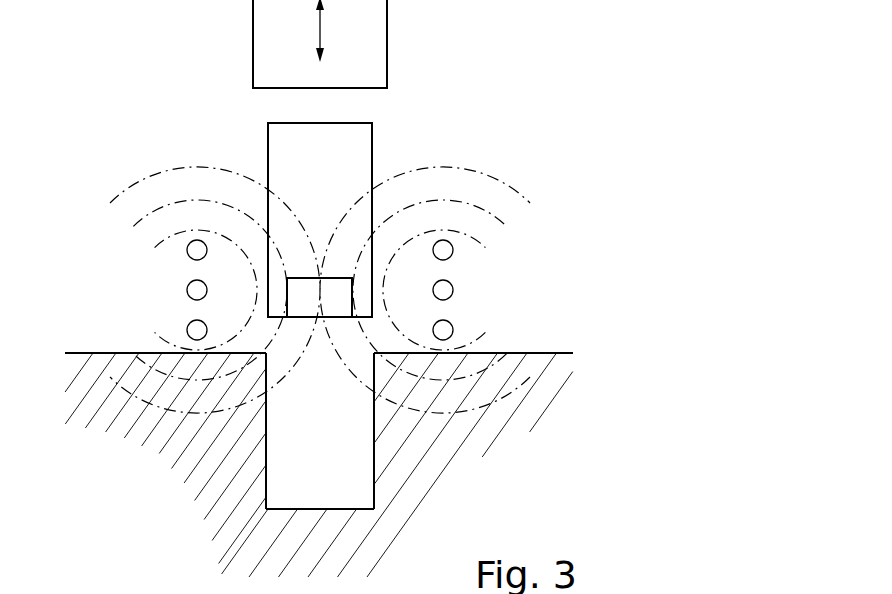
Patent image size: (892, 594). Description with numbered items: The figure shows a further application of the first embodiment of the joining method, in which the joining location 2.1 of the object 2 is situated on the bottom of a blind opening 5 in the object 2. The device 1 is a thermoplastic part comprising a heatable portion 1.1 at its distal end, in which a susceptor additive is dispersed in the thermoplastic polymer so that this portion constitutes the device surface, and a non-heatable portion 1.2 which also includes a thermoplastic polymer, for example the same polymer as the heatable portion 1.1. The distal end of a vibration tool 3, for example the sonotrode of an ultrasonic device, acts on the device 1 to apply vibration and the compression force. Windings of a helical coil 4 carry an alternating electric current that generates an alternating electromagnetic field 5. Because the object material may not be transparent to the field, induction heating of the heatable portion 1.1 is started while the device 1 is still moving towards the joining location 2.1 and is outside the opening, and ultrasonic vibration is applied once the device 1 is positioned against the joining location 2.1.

The device 1 is at (278, 329).
The heatable portion 1.1 is at (330, 298).
The non-heatable portion 1.2 is at (313, 250).
The object 2 is at (228, 456).
The joining location 2.1 is at (320, 497).
The vibration tool 3 is at (279, 47).
The helical coil 4 is at (188, 253).
The electromagnetic field / blind opening 5 is at (350, 473).